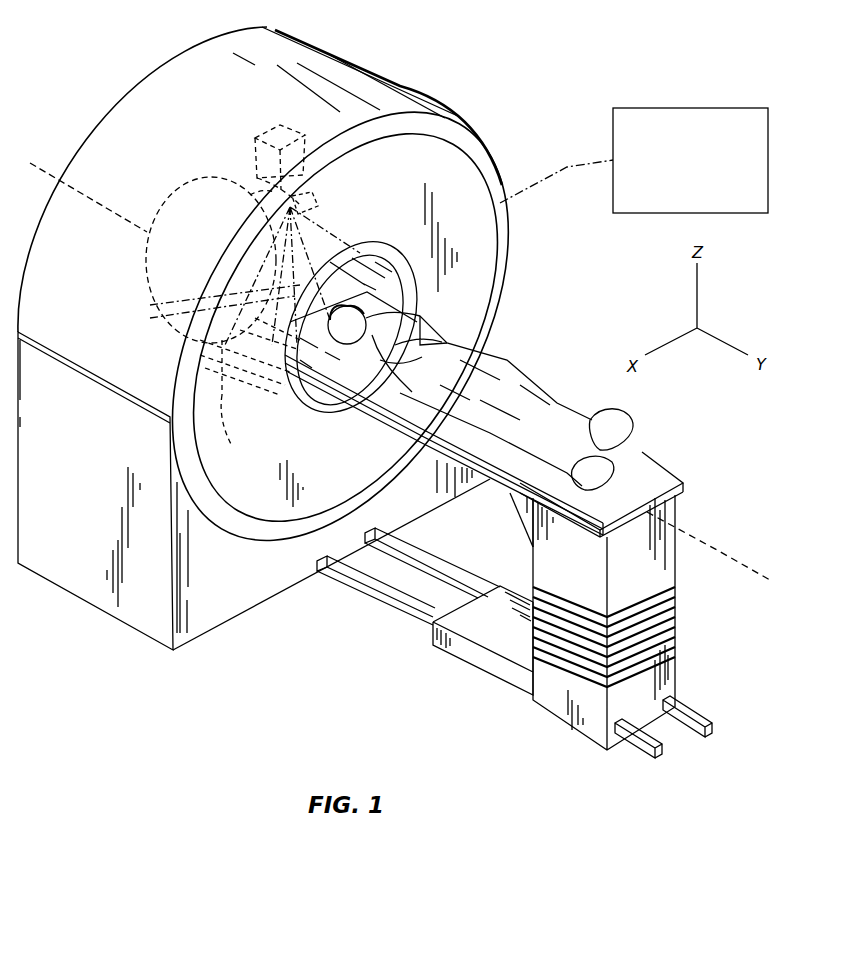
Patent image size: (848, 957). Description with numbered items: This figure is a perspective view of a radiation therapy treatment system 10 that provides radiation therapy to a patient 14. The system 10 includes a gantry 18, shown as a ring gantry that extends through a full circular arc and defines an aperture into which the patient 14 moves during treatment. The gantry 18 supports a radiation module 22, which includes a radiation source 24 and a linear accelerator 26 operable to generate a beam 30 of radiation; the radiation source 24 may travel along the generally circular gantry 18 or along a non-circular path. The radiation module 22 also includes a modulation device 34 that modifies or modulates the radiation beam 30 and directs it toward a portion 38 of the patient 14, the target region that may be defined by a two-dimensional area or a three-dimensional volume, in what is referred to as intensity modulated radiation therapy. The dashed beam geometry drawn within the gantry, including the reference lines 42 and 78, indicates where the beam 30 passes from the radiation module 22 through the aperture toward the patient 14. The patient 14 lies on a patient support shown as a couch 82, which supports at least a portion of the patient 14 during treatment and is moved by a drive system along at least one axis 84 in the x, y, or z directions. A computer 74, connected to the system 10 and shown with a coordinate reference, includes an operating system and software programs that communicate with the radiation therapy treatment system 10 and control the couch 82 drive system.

The radiation therapy treatment system 10 is at (523, 34).
The patient 14 is at (530, 400).
The gantry 18 is at (150, 80).
The radiation module 22 is at (273, 122).
The radiation source 24 is at (257, 142).
The linear accelerator 26 is at (250, 170).
The beam of radiation 30 is at (165, 303).
The modulation device 34 is at (320, 203).
The portion of the patient 38 is at (508, 326).
The x-ray beam 42 is at (308, 219).
The computer 74 is at (705, 108).
The detector 78 is at (230, 443).
The couch 82 is at (645, 463).
The axis 84 is at (725, 545).